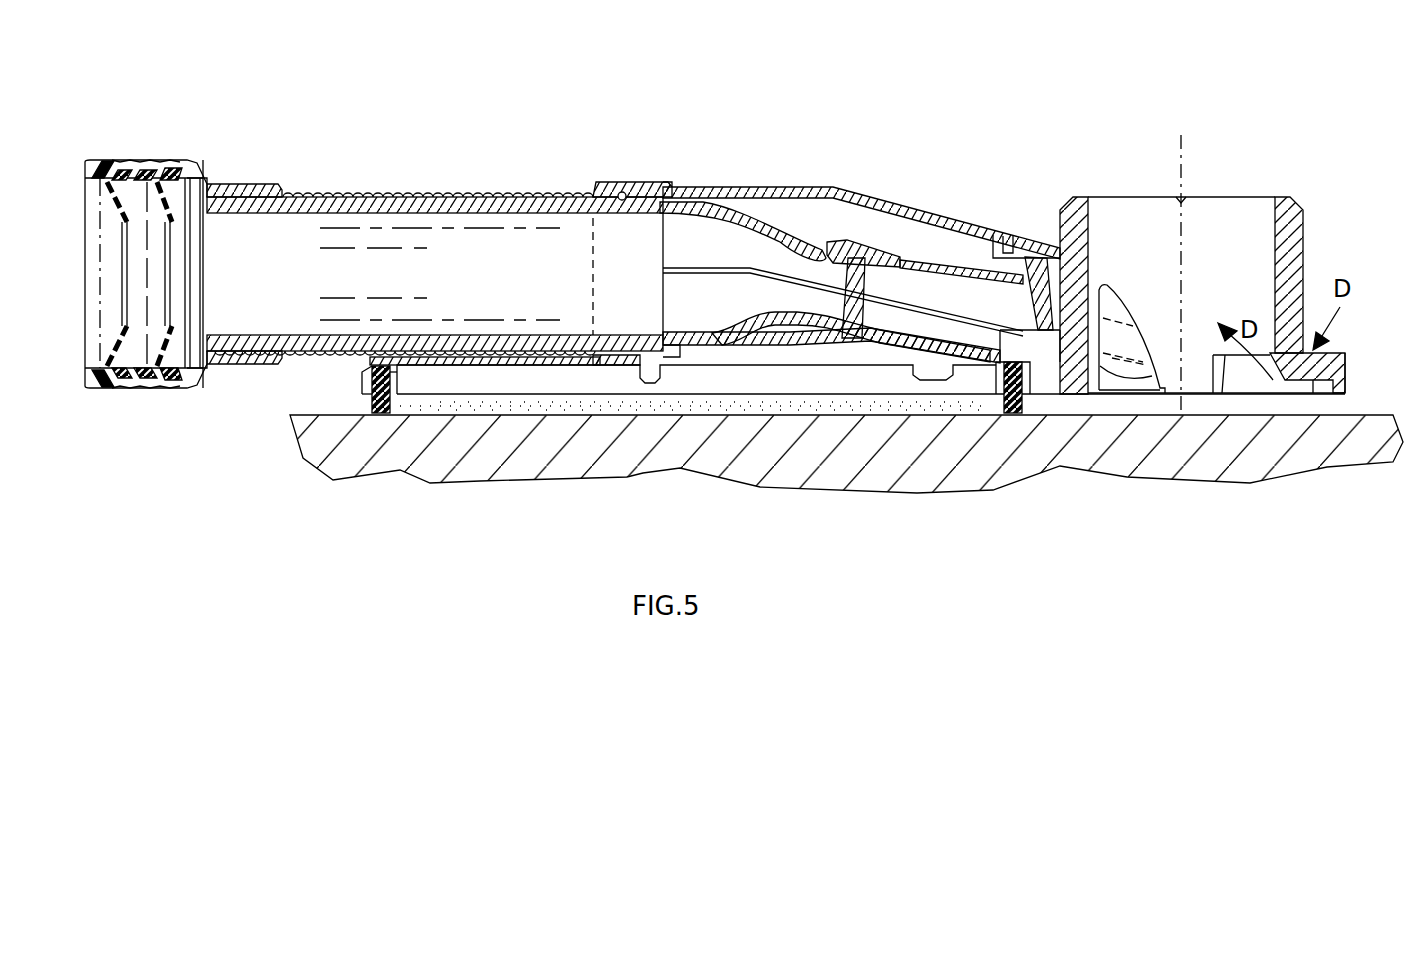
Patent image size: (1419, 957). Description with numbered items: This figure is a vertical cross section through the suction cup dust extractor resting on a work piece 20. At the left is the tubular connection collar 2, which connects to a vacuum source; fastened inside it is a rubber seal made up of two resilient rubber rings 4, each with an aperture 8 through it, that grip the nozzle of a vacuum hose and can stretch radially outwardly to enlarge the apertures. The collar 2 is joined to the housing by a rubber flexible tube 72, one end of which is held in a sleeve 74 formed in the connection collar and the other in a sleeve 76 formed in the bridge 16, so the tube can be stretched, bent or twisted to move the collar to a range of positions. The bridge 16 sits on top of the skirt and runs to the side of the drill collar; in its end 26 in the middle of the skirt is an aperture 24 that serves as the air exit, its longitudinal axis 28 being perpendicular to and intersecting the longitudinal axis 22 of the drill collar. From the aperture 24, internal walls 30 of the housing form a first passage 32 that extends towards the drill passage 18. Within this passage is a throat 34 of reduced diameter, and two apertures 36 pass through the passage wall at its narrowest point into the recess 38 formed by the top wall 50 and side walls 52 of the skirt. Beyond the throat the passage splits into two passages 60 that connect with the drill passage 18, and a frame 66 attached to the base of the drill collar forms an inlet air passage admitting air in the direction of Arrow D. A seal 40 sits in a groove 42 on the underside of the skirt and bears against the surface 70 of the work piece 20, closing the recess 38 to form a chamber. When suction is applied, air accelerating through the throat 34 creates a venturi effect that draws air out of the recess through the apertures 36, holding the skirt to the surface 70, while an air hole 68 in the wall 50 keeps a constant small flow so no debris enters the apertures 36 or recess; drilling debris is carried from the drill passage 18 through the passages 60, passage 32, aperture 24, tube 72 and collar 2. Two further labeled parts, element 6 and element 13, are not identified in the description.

The connection collar 2 is at (170, 166).
The rubber rings 4 is at (146, 294).
The nut 6 is at (104, 168).
The aperture 8 is at (99, 272).
The connector 13 is at (1109, 172).
The bridge 16 is at (876, 189).
The drill passage 18 is at (1239, 267).
The work piece 20 is at (1097, 443).
The longitudinal axis 22 is at (1180, 313).
The aperture 24 is at (593, 250).
The end 26 is at (595, 190).
The longitudinal axis 28 is at (430, 272).
The internal walls 30 is at (727, 334).
The first passage 32 is at (711, 263).
The throat 34 is at (820, 258).
The apertures 36 is at (845, 312).
The recess 38 is at (752, 385).
The seal 40 is at (378, 414).
The groove 42 is at (390, 375).
The top wall 50 is at (433, 365).
The side walls 52 is at (362, 385).
The passages 60 is at (1121, 342).
The frame 66 is at (1332, 364).
The air hole 68 is at (560, 365).
The surface 70 is at (1258, 412).
The flexible tube 72 is at (420, 198).
The sleeve 74 is at (263, 201).
The sleeve 76 is at (622, 196).